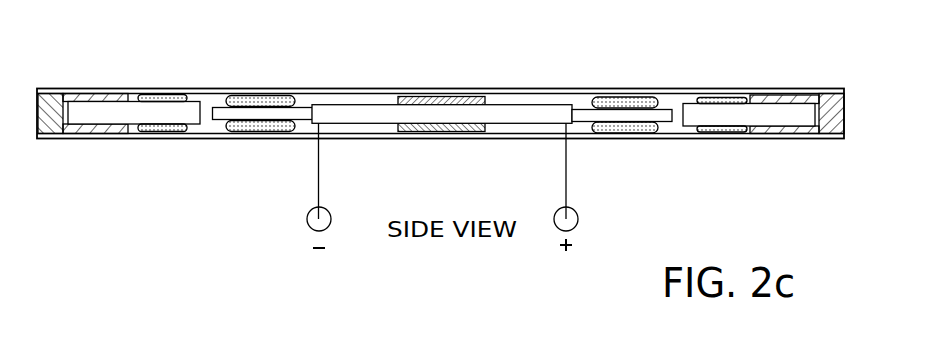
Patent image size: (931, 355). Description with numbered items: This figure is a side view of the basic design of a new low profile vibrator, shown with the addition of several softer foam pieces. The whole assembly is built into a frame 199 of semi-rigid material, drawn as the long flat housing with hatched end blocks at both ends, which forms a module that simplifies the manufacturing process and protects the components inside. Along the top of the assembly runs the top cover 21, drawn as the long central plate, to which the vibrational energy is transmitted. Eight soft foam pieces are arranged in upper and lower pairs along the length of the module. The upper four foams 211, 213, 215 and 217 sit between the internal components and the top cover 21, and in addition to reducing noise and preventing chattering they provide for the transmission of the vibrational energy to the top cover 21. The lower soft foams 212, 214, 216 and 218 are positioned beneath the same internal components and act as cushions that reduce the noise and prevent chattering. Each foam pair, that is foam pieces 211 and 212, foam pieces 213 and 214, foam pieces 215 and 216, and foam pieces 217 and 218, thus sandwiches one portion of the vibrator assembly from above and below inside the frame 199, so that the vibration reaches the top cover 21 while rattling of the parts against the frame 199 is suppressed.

The frame 199 is at (55, 100).
The top cover 21 is at (518, 97).
The foam piece 211 is at (158, 98).
The foam piece 212 is at (160, 133).
The foam piece 213 is at (250, 98).
The foam piece 214 is at (248, 133).
The foam piece 215 is at (630, 97).
The foam piece 216 is at (630, 135).
The foam piece 217 is at (722, 98).
The foam piece 218 is at (722, 133).